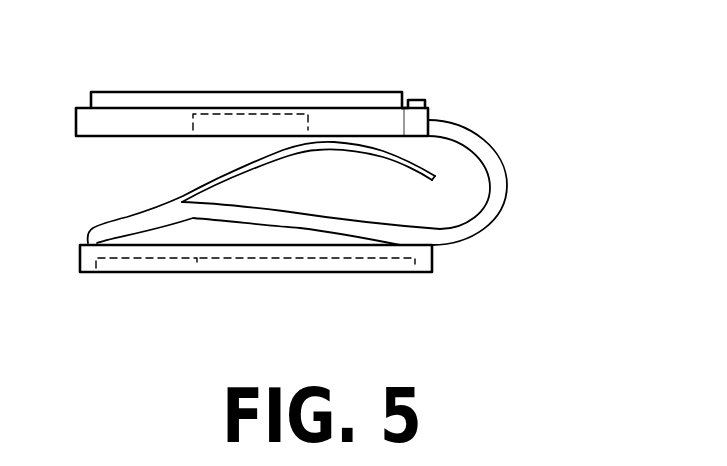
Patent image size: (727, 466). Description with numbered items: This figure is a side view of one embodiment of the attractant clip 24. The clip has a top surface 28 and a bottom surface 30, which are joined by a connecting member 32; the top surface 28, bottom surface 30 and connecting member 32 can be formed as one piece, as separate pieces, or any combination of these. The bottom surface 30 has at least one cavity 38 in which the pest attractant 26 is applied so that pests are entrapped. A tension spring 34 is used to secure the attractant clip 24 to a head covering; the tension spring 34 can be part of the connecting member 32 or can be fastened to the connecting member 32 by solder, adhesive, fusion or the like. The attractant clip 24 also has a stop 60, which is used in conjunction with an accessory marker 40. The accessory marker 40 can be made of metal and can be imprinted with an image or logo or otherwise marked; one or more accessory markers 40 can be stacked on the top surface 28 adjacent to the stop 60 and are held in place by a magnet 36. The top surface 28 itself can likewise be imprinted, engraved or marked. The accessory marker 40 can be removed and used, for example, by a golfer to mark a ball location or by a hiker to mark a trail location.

The attractant clip 24 is at (530, 149).
The pest attractant 26 is at (343, 277).
The top surface 28 is at (80, 107).
The bottom surface 30 is at (85, 273).
The connecting member 32 is at (490, 205).
The tension spring 34 is at (207, 176).
The magnet 36 is at (268, 125).
The cavity 38 is at (197, 267).
The accessory marker 40 is at (186, 97).
The stop 60 is at (412, 100).